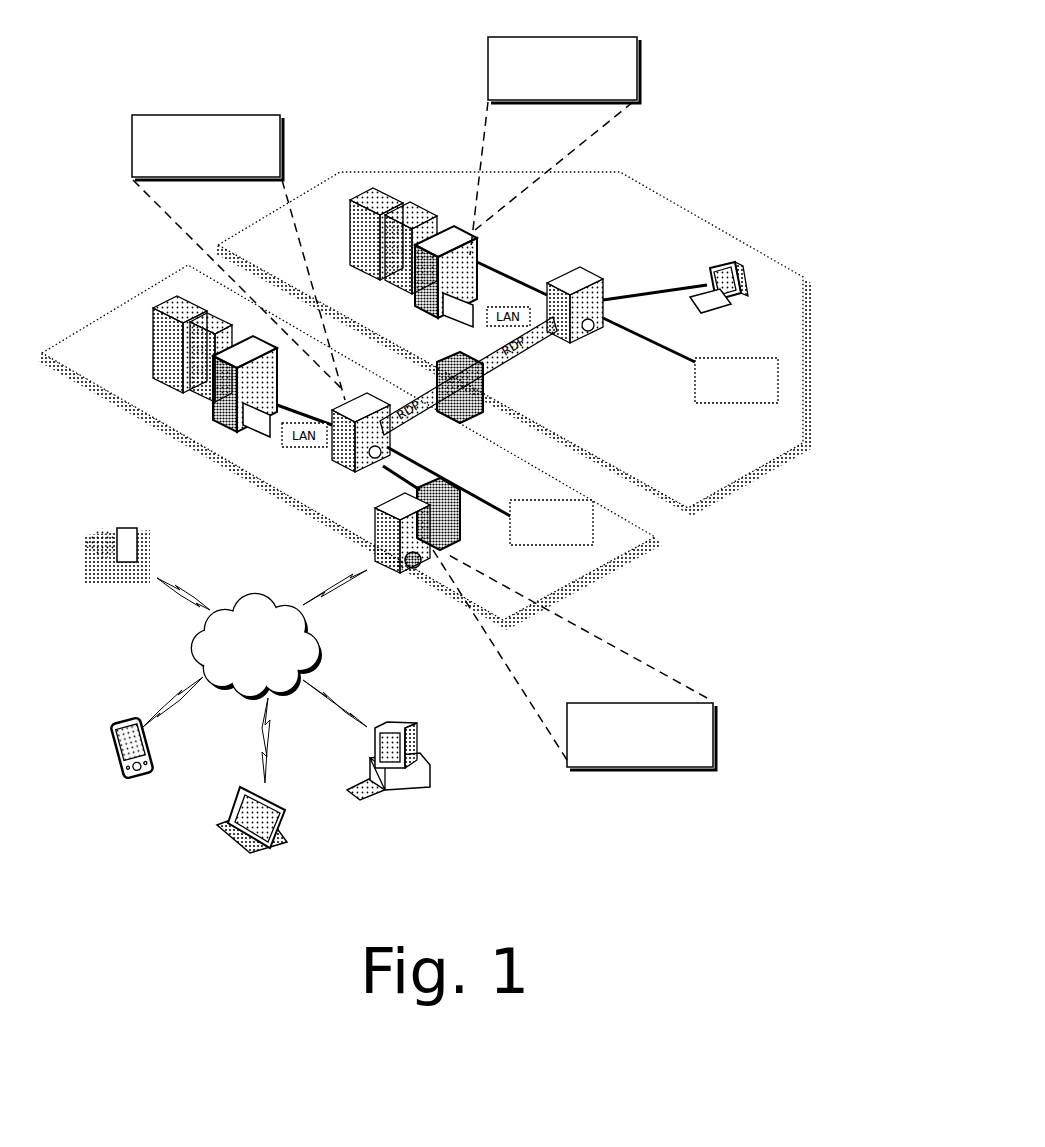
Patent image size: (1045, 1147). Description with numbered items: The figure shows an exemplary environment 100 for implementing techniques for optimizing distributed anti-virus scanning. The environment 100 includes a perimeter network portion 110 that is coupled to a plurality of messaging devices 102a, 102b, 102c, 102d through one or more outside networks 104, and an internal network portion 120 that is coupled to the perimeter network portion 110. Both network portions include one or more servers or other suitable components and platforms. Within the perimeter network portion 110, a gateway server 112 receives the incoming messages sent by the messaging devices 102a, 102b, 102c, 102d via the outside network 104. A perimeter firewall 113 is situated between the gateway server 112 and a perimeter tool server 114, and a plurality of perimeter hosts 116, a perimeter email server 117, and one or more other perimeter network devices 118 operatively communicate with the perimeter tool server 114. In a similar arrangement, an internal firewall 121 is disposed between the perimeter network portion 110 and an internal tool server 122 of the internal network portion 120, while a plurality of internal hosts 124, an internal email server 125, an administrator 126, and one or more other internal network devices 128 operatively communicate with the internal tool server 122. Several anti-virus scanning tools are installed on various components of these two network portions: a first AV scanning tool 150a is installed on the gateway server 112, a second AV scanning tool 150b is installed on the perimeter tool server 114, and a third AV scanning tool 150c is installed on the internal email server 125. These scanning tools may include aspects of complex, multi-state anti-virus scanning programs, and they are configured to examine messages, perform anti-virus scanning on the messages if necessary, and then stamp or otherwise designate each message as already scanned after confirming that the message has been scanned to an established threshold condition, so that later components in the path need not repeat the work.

The environment 100 is at (682, 70).
The messaging device 102a is at (130, 530).
The messaging device 102b is at (125, 720).
The messaging device 102c is at (235, 840).
The messaging device 102d is at (407, 727).
The outside network 104 is at (257, 647).
The perimeter network portion 110 is at (385, 447).
The gateway server 112 is at (366, 534).
The perimeter firewall 113 is at (435, 485).
The perimeter tool server 114 is at (300, 445).
The perimeter hosts 116 is at (137, 368).
The perimeter email server 117 is at (187, 402).
The perimeter network devices 118 is at (538, 508).
The internal network portion 120 is at (515, 362).
The internal firewall 121 is at (519, 390).
The internal tool server 122 is at (613, 296).
The internal hosts 124 is at (416, 219).
The internal email server 125 is at (493, 282).
The administrator 126 is at (750, 278).
The internal network devices 128 is at (780, 359).
The first AV scanning tool 150a is at (574, 660).
The second AV scanning tool 150b is at (238, 257).
The third AV scanning tool 150c is at (555, 146).